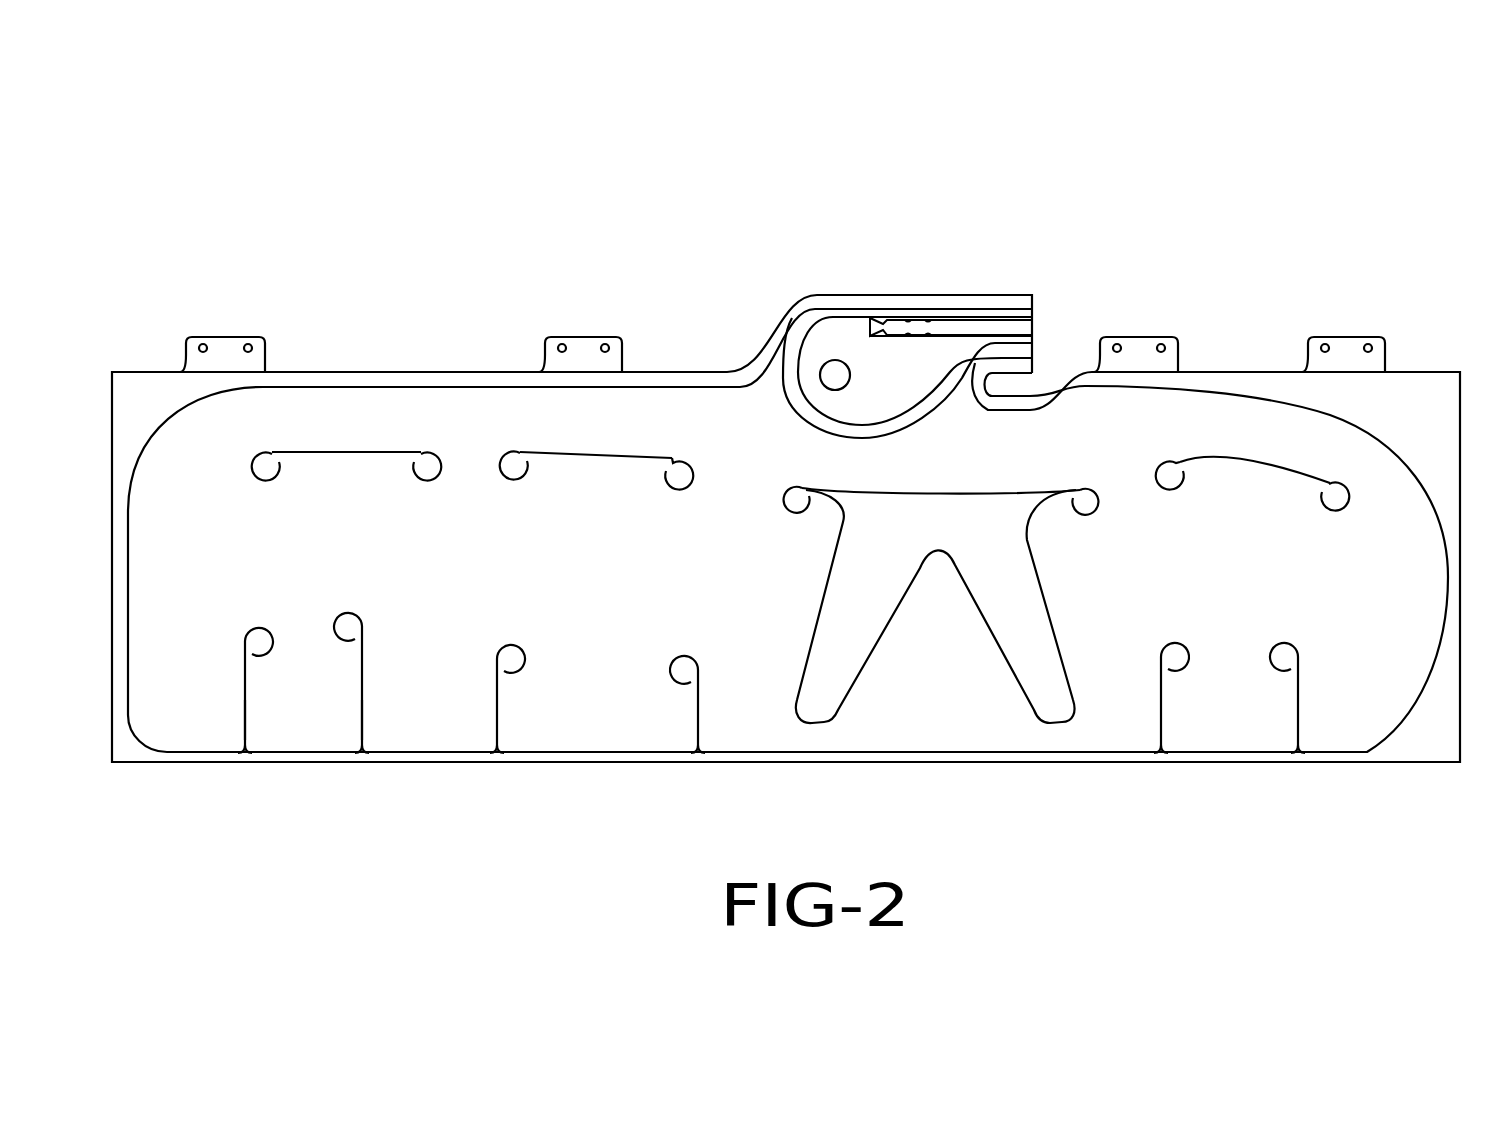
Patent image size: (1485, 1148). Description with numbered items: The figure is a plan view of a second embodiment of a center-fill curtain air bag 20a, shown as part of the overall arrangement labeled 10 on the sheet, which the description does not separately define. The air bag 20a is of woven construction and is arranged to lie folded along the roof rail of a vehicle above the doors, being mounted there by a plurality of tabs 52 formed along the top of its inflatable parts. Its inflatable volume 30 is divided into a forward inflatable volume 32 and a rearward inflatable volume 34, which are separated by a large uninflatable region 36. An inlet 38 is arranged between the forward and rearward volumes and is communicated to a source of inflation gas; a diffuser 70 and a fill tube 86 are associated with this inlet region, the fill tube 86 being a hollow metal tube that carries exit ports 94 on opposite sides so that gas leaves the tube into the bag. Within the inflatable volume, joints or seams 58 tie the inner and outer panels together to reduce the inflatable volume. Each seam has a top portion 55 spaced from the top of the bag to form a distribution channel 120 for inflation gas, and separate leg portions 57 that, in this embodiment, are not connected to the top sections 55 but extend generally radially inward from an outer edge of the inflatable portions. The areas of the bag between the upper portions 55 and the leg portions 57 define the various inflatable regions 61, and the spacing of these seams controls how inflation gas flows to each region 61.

The garment hanger 10 is at (370, 178).
The center-fill curtain air bag 20a is at (598, 214).
The inflatable volume 30 is at (455, 400).
The forward inflatable volume 32 is at (378, 512).
The rearward inflatable volume 34 is at (1285, 540).
The uninflatable region 36 is at (856, 563).
The inlet 38 is at (1018, 294).
The tabs 52 is at (228, 337).
The top portions of joints or seams 55 is at (378, 452).
The leg portions 57 is at (246, 695).
The joints or seams 58 is at (296, 440).
The inflatable regions 61 is at (234, 551).
The diffuser 70 is at (802, 366).
The fill tube 86 is at (988, 318).
The exit ports 94 is at (900, 318).
The distribution channel 120 is at (565, 436).